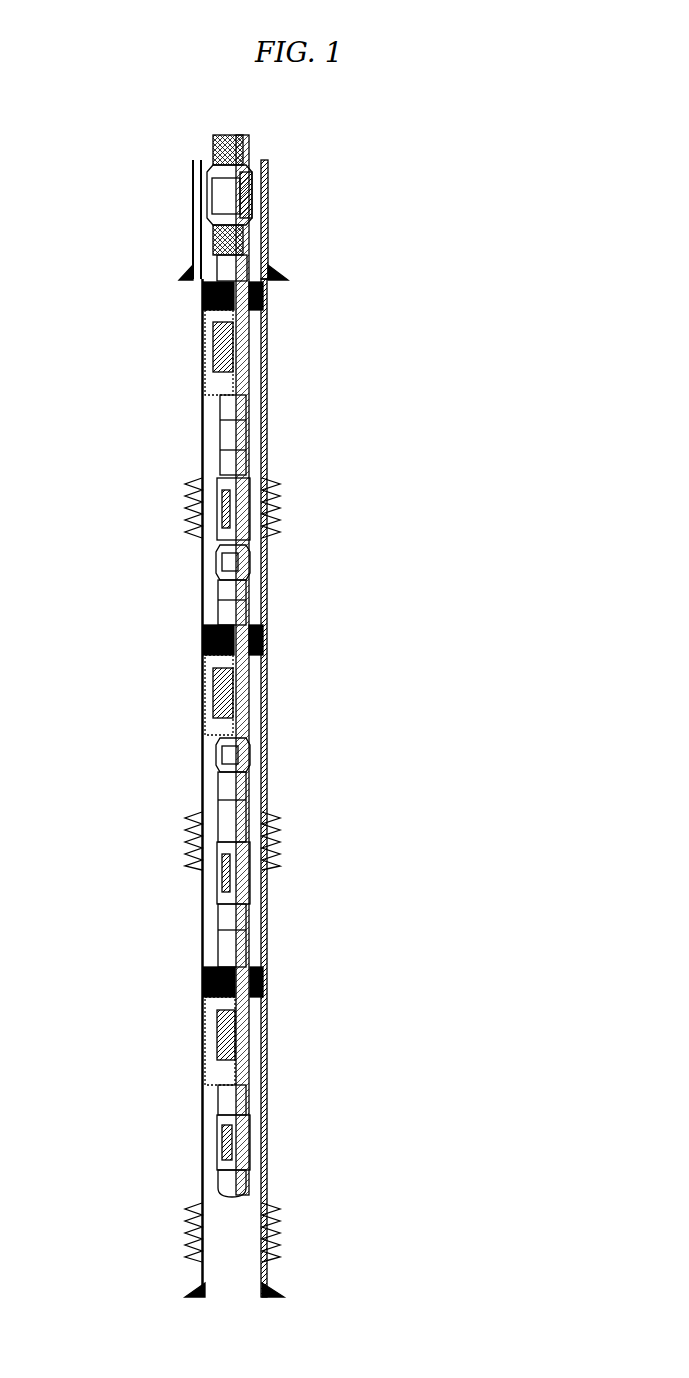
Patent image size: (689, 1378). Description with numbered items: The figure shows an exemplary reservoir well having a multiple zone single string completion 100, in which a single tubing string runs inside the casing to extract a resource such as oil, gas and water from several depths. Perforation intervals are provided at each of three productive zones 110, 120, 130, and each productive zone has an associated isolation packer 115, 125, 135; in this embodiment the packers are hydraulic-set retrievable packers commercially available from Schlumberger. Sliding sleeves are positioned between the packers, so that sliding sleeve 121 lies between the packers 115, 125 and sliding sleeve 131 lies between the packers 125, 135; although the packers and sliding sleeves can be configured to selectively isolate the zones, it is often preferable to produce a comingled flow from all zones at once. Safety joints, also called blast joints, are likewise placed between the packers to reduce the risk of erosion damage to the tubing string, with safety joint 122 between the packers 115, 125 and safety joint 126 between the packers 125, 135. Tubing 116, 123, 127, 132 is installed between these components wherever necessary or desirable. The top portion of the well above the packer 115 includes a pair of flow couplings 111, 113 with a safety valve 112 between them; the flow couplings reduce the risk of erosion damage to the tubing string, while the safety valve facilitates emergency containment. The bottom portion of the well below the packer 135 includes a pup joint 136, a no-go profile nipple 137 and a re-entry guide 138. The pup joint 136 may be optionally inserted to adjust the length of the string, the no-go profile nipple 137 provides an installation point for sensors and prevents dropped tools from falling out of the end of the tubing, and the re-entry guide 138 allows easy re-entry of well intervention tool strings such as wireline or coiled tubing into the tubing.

The multiple zone single string completion 100 is at (505, 128).
The productive zone 110 is at (165, 525).
The flow coupling 111 is at (243, 155).
The safety valve 112 is at (238, 197).
The flow coupling 113 is at (243, 240).
The isolation packer 115 is at (264, 296).
The tubing 116 is at (247, 437).
The productive zone 120 is at (165, 863).
The sliding sleeve 121 is at (237, 532).
The safety joint 122 is at (245, 565).
The tubing 123 is at (248, 596).
The isolation packer 125 is at (264, 647).
The safety joint 126 is at (248, 755).
The tubing 127 is at (248, 782).
The productive zone 130 is at (167, 1255).
The sliding sleeve 131 is at (245, 877).
The tubing 132 is at (245, 933).
The isolation packer 135 is at (265, 982).
The pup joint 136 is at (247, 1100).
The no-go profile nipple 137 is at (240, 1147).
The re-entry guide 138 is at (250, 1193).